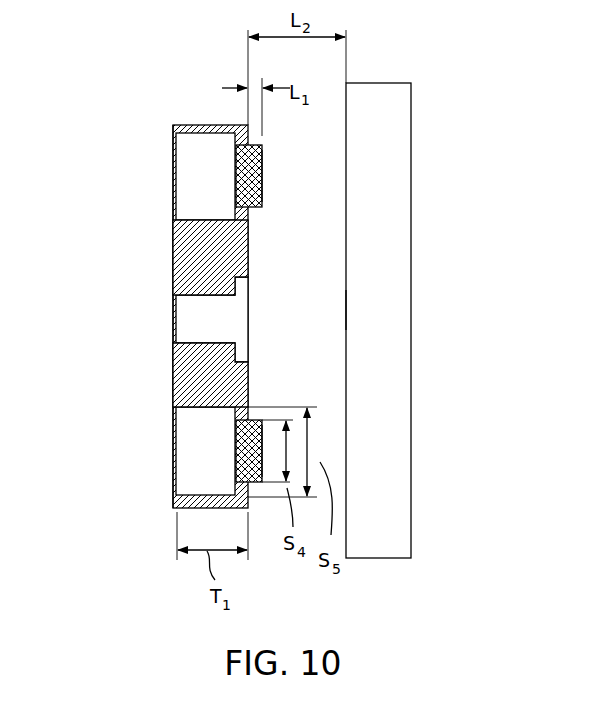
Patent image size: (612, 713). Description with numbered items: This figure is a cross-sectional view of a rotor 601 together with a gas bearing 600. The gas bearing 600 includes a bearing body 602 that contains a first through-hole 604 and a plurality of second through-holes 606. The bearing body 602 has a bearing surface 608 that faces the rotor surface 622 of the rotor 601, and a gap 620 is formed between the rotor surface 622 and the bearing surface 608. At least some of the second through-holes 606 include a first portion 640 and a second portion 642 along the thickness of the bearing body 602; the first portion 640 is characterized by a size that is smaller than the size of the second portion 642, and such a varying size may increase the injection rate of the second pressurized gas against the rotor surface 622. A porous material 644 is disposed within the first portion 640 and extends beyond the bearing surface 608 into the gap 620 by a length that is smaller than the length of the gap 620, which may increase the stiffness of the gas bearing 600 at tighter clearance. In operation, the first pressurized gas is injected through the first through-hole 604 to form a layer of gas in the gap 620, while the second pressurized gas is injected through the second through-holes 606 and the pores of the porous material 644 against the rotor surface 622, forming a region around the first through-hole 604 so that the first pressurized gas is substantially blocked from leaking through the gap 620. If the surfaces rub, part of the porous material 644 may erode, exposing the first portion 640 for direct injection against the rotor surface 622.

The gas bearing 600 is at (170, 108).
The rotor 601 is at (398, 70).
The bearing body 602 is at (183, 393).
The first through-hole 604 is at (169, 325).
The second through-holes 606 is at (169, 195).
The bearing surface 608 is at (250, 230).
The gap 620 is at (328, 442).
The rotor surface 622 is at (346, 310).
The first portion 640 is at (263, 160).
The second portion 642 is at (183, 155).
The porous material 644 is at (263, 197).